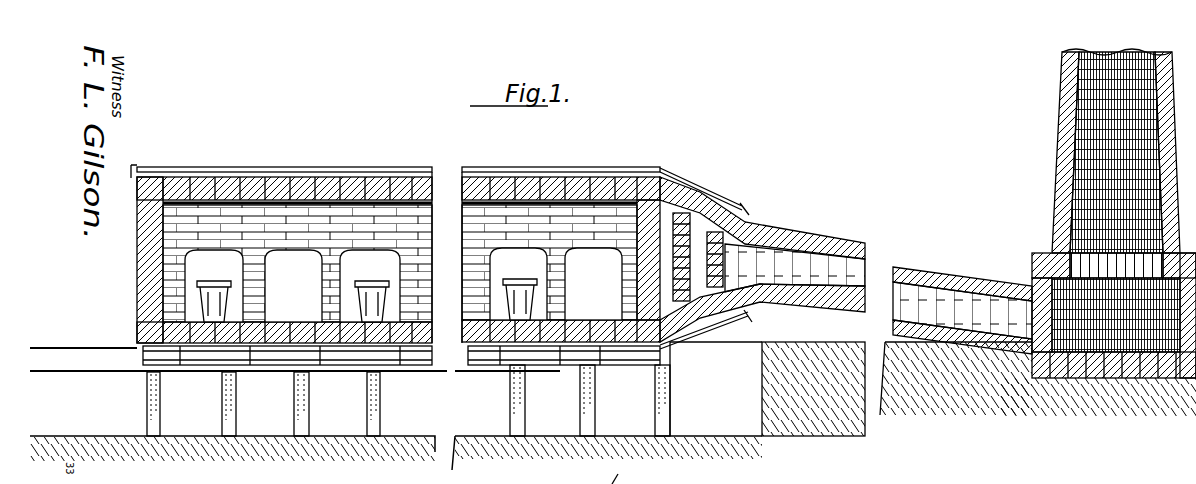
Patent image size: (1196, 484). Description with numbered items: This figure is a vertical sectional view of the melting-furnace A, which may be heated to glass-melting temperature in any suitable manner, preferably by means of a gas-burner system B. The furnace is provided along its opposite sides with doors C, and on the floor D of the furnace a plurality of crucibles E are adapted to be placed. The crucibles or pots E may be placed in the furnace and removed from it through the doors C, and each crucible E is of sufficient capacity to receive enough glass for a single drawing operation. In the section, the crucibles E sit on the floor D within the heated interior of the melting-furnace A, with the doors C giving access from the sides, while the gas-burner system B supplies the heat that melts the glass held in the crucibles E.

The melting-furnace A is at (402, 158).
The gas-burner system B is at (339, 377).
The doors C is at (293, 286).
The floor D is at (580, 318).
The crucibles E is at (214, 283).